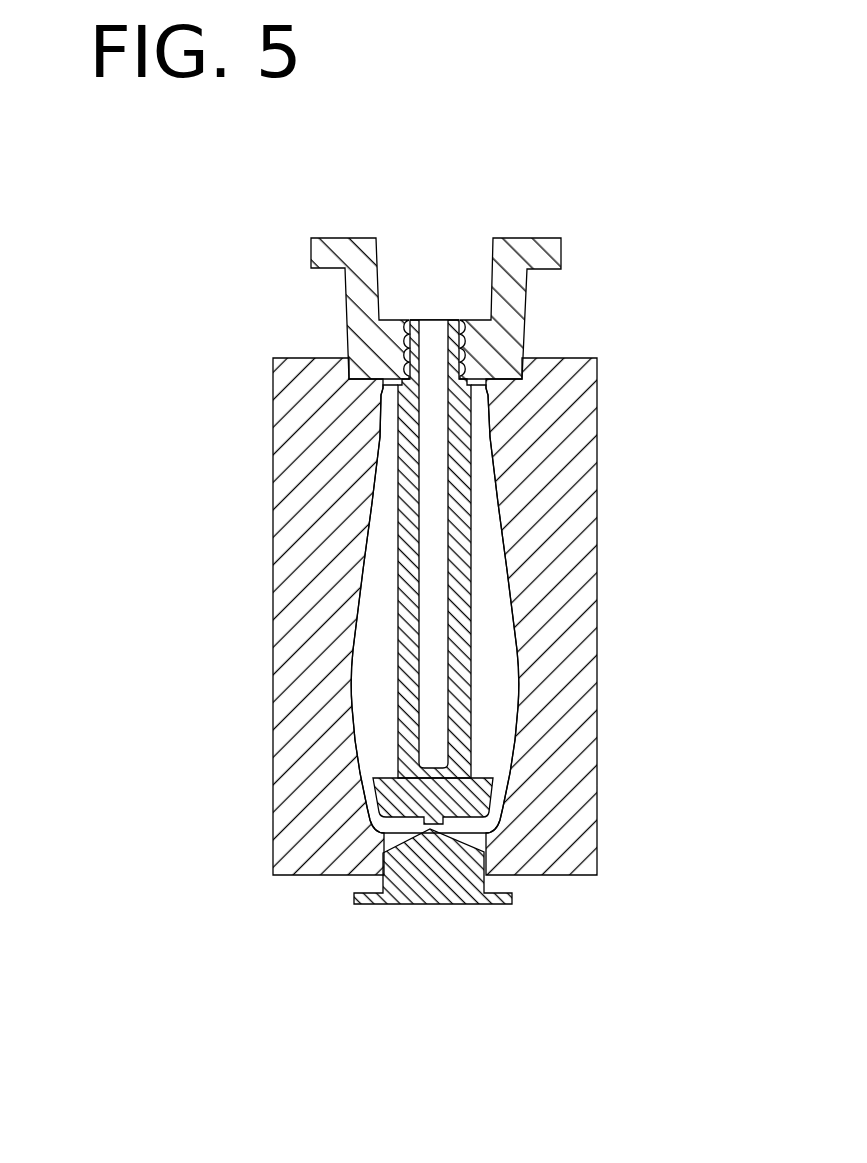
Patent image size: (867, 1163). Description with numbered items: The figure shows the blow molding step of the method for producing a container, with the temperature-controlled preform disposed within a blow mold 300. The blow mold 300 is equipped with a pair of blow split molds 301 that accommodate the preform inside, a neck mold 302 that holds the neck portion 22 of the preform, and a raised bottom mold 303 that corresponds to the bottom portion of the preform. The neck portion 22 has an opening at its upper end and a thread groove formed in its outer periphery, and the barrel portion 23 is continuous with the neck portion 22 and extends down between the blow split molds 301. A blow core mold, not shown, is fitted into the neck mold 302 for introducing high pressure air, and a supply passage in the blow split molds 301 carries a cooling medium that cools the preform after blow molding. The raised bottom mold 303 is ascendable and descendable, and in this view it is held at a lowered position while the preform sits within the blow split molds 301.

The blow mold 300 is at (608, 203).
The blow split molds 301 is at (292, 450).
The neck mold 302 is at (517, 322).
The raised bottom mold 303 is at (417, 895).
The neck portion 22 is at (462, 318).
The barrel portion 23 is at (463, 563).